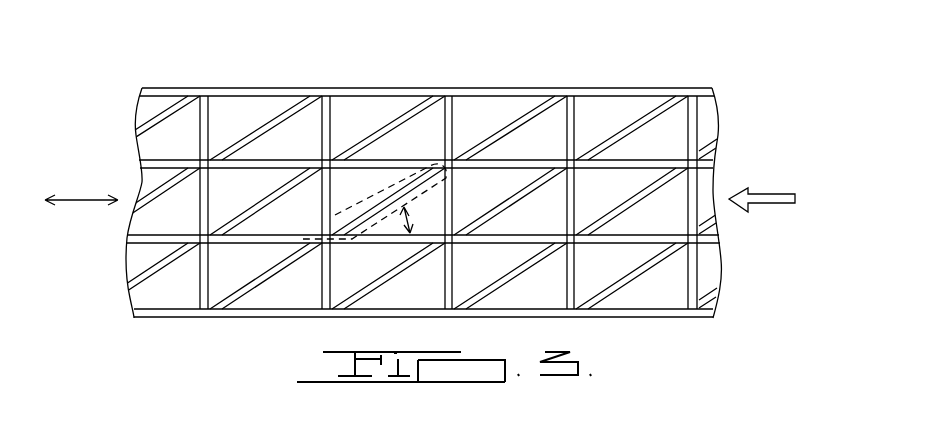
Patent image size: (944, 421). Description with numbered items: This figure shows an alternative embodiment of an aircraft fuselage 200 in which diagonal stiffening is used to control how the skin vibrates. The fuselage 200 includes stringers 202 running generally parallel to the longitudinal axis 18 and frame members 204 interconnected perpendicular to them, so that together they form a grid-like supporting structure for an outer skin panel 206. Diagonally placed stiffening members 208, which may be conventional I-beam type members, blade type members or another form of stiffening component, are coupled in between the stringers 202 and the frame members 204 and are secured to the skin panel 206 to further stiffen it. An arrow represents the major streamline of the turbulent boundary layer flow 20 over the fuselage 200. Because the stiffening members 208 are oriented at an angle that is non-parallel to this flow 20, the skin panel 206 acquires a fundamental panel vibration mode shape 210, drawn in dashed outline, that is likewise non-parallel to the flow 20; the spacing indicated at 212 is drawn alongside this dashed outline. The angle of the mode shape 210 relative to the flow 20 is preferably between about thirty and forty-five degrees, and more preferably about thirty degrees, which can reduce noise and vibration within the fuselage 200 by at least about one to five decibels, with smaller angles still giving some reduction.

The fuselage 200 is at (393, 189).
The stringers 202 is at (602, 240).
The frame members 204 is at (327, 288).
The outer skin panel 206 is at (367, 115).
The stiffening members 208 is at (248, 133).
The fundamental panel vibration mode shape 210 is at (303, 239).
The spacing 212 is at (413, 212).
The longitudinal axis 18 is at (83, 199).
The major streamline of the turbulent boundary layer flow 20 is at (765, 195).